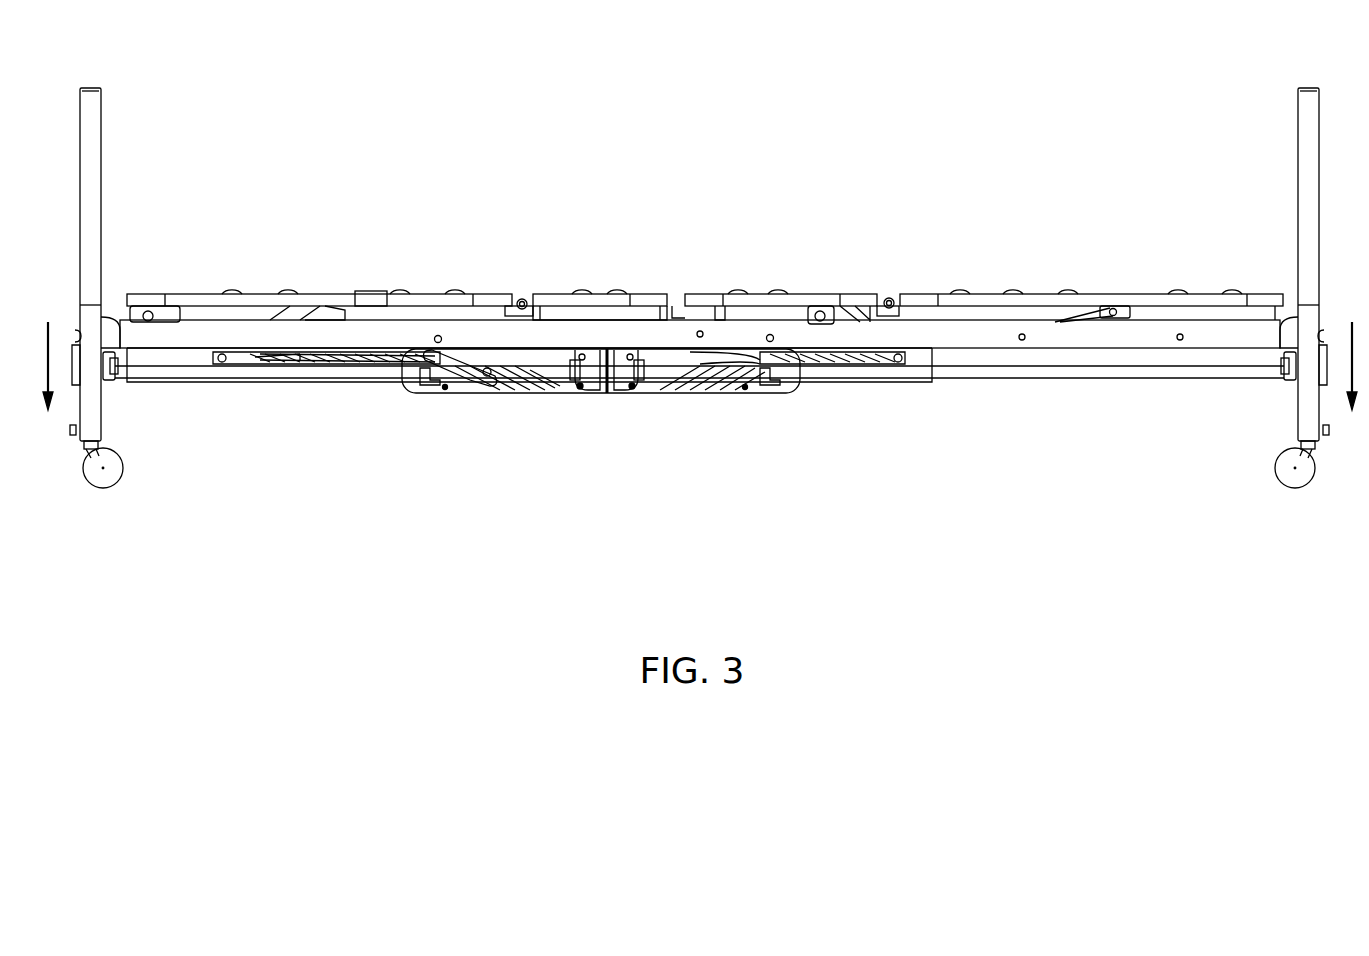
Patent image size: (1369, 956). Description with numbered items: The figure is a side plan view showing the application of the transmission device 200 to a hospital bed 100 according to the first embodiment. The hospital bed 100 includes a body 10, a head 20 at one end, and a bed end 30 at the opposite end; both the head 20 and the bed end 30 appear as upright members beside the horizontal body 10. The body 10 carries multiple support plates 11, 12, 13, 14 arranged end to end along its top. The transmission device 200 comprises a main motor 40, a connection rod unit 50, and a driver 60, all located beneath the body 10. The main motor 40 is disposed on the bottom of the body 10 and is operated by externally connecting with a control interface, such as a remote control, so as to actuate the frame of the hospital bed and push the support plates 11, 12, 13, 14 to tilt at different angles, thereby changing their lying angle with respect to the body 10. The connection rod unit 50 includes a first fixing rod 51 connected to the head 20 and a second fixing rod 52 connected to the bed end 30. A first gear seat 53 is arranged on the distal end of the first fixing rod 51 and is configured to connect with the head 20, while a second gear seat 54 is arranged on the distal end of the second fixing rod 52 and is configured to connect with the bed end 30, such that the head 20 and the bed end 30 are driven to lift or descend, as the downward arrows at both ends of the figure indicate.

The hospital bed 100 is at (752, 210).
The transmission device 200 is at (518, 420).
The body 10 is at (488, 326).
The support plate 11 is at (322, 300).
The support plate 12 is at (638, 300).
The support plate 13 is at (815, 300).
The support plate 14 is at (1045, 300).
The head 20 is at (108, 233).
The bed end 30 is at (1295, 233).
The main motor 40 is at (715, 394).
The connection rod unit 50 is at (985, 382).
The first fixing rod 51 is at (375, 368).
The second fixing rod 52 is at (853, 370).
The first gear seat 53 is at (140, 385).
The second gear seat 54 is at (1283, 385).
The driver 60 is at (598, 392).